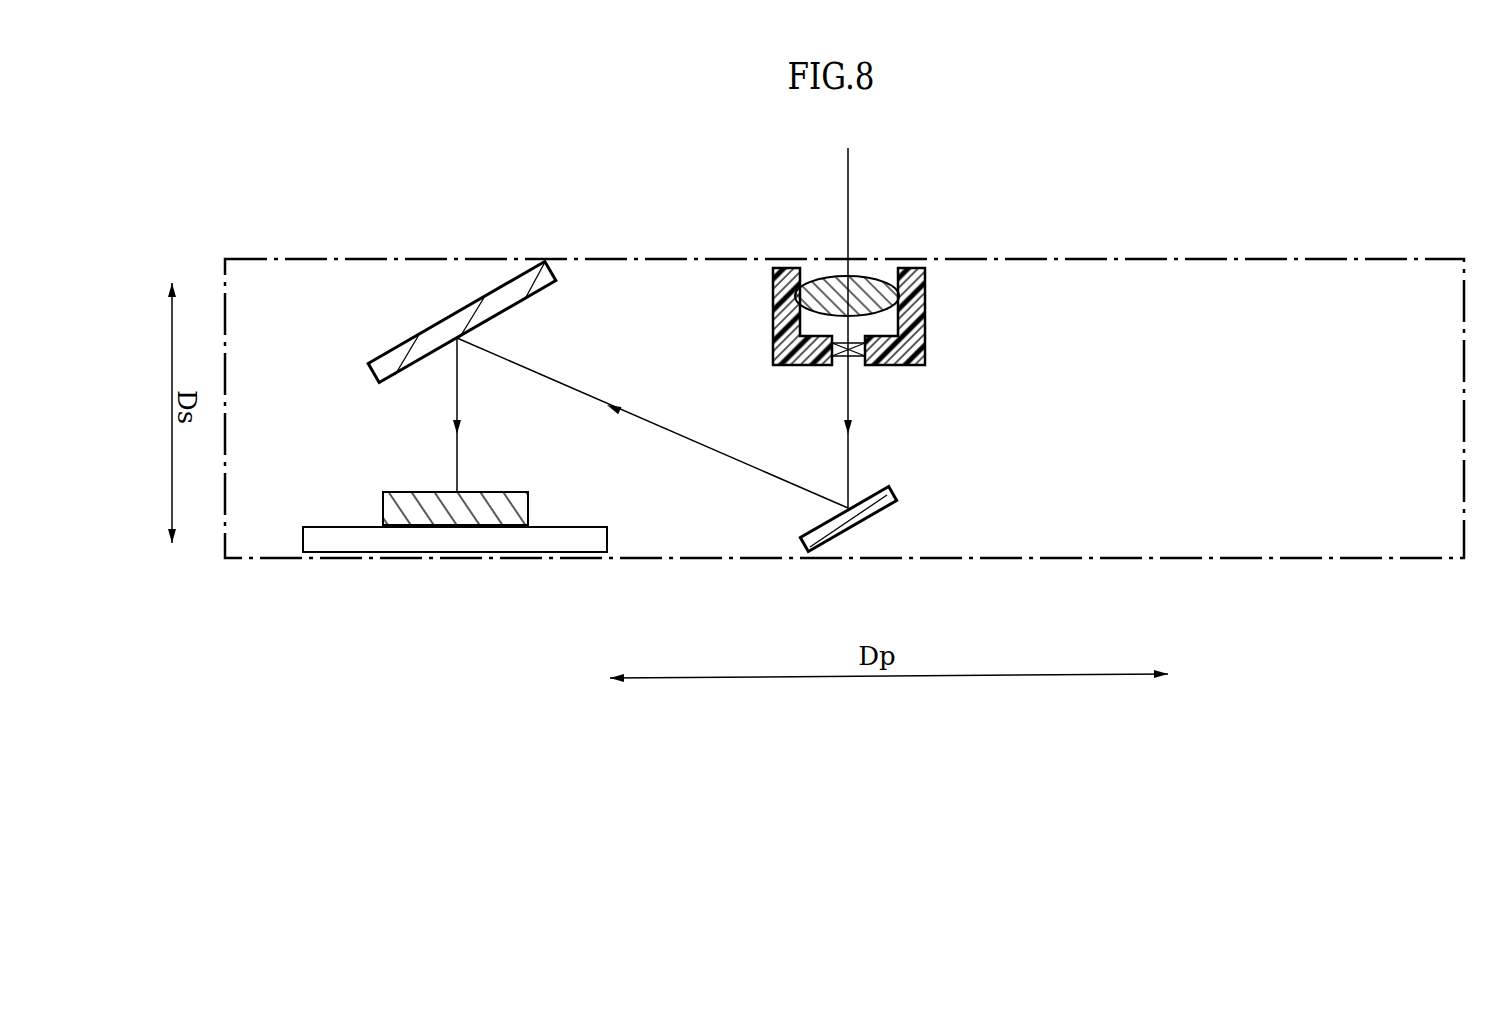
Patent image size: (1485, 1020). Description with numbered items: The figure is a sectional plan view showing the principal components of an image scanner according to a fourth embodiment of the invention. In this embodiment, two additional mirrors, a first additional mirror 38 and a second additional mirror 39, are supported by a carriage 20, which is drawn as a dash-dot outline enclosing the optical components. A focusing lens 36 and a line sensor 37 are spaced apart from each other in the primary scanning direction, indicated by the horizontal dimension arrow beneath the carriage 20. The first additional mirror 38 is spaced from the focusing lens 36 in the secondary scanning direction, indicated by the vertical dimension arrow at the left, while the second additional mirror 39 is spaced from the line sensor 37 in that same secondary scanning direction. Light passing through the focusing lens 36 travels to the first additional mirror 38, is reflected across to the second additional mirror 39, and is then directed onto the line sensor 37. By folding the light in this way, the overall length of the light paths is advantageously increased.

The carriage 20 is at (1089, 562).
The focusing lens 36 is at (822, 278).
The line sensor 37 is at (490, 520).
The first additional mirror 38 is at (877, 505).
The second additional mirror 39 is at (523, 300).